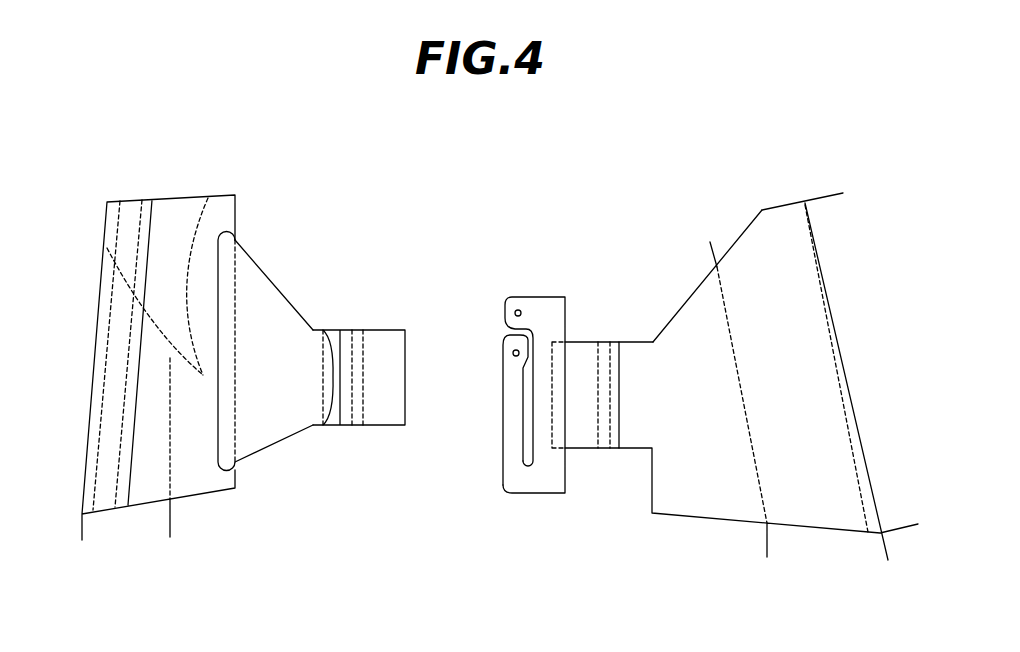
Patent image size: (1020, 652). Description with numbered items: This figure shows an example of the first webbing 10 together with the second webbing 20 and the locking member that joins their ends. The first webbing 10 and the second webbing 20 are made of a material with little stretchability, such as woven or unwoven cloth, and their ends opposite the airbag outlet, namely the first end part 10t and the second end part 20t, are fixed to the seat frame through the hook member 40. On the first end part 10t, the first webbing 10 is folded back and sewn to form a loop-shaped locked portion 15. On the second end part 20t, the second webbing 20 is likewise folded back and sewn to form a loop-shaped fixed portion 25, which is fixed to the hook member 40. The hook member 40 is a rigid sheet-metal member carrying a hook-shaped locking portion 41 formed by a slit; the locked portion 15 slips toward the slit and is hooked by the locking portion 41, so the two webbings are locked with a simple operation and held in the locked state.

The first webbing 10 is at (281, 281).
The first end part 10t is at (353, 273).
The locked portion 15 is at (372, 427).
The second webbing 20 is at (750, 222).
The second end part 20t is at (654, 257).
The fixed portion 25 is at (572, 340).
The hook member 40 is at (553, 497).
The locking portion 41 is at (512, 383).